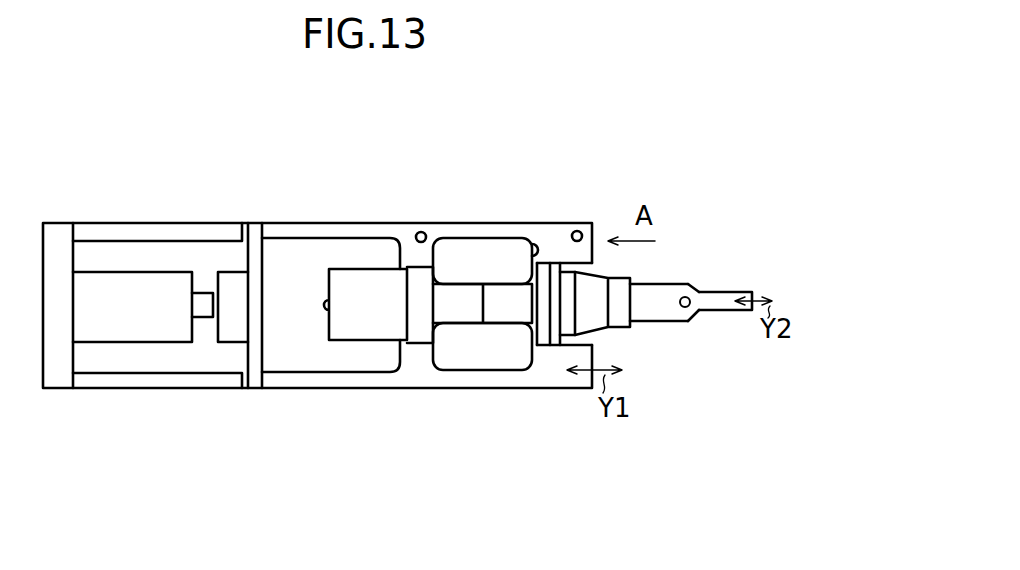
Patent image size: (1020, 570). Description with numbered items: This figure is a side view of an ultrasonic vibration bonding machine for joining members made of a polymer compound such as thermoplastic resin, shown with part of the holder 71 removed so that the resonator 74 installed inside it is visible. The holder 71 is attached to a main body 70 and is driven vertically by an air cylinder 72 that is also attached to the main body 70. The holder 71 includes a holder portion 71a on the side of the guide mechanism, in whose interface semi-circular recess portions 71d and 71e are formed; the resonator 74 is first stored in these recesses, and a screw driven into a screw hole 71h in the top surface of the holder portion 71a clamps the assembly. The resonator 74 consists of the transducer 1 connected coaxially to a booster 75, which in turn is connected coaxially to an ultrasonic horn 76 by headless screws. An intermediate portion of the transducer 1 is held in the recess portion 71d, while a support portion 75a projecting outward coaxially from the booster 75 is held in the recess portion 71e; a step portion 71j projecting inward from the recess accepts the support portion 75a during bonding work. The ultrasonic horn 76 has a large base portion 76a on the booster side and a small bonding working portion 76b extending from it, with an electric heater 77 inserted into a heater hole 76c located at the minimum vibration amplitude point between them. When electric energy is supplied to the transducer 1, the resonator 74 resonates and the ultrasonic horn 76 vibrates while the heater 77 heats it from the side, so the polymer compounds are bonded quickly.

The transducer 1 is at (357, 282).
The main body 70 is at (199, 355).
The holder 71 is at (253, 385).
The holder portion on the side of the guide mechanism 71a is at (408, 368).
The recess portion 71d is at (440, 338).
The recess portion 71e is at (568, 337).
The screw hole 71h is at (424, 231).
The step portion 71j is at (528, 244).
The air cylinder 72 is at (140, 330).
The resonator 74 is at (503, 273).
The booster 75 is at (512, 313).
The support portion 75a is at (553, 337).
The ultrasonic horn 76 is at (657, 325).
The base portion 76a is at (665, 283).
The bonding working portion 76b is at (722, 312).
The heater hole 76c is at (692, 288).
The heater 77 is at (692, 317).